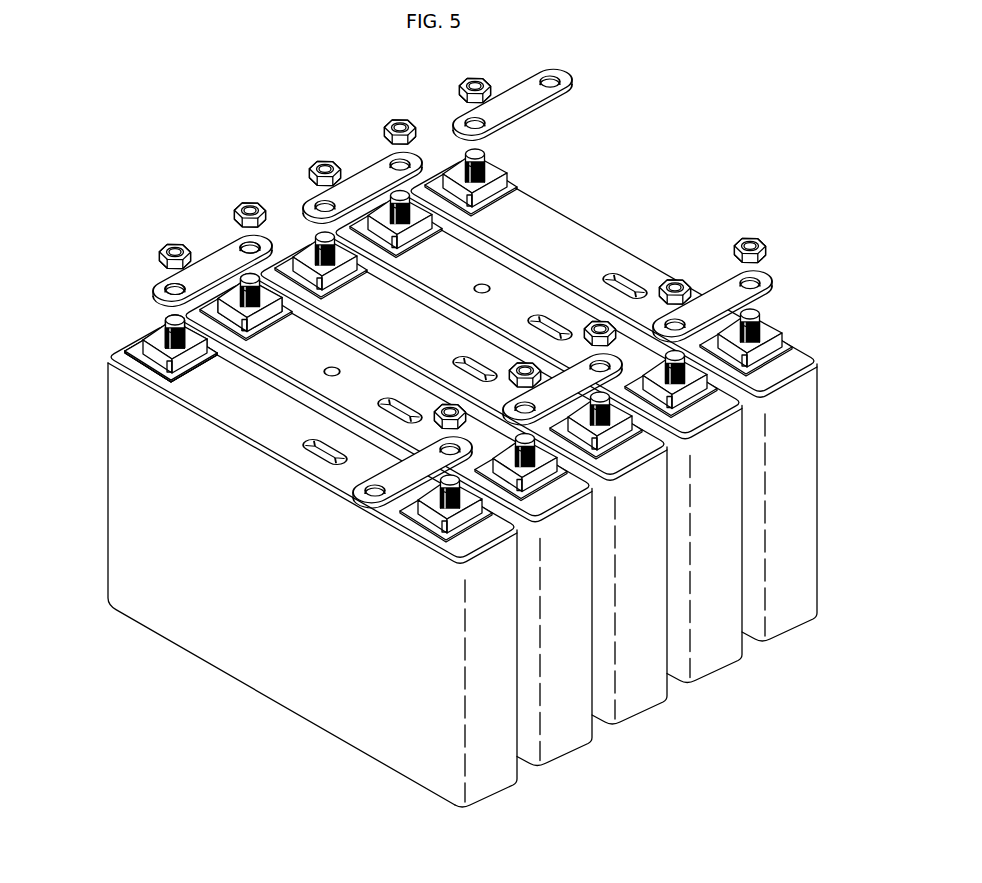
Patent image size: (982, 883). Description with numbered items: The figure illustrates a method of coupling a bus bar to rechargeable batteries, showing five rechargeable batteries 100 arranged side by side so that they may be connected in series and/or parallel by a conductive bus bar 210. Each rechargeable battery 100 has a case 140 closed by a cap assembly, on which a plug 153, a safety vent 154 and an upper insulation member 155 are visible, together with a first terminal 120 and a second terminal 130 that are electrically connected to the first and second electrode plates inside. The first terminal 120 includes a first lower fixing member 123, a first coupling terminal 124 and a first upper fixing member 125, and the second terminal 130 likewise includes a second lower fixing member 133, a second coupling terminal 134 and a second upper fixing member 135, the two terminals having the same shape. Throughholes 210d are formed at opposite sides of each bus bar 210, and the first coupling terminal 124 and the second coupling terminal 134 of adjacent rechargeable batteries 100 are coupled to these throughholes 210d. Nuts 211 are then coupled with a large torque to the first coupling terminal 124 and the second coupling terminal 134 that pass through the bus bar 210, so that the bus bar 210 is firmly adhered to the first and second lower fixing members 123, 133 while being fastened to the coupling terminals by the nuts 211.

The rechargeable battery 100 is at (163, 660).
The first terminal 120 is at (164, 320).
The first lower fixing member 123 is at (184, 374).
The first coupling terminal 124 is at (146, 340).
The first upper fixing member 125 is at (146, 366).
The second terminal 130 is at (296, 308).
The second lower fixing member 133 is at (270, 328).
The second coupling terminal 134 is at (262, 279).
The second upper fixing member 135 is at (156, 313).
The case 140 is at (300, 695).
The plug 153 is at (341, 369).
The safety vent 154 is at (312, 445).
The upper insulation member 155 is at (204, 377).
The bus bar 210 is at (216, 248).
The throughholes 210d is at (167, 283).
The nuts 211 is at (166, 245).